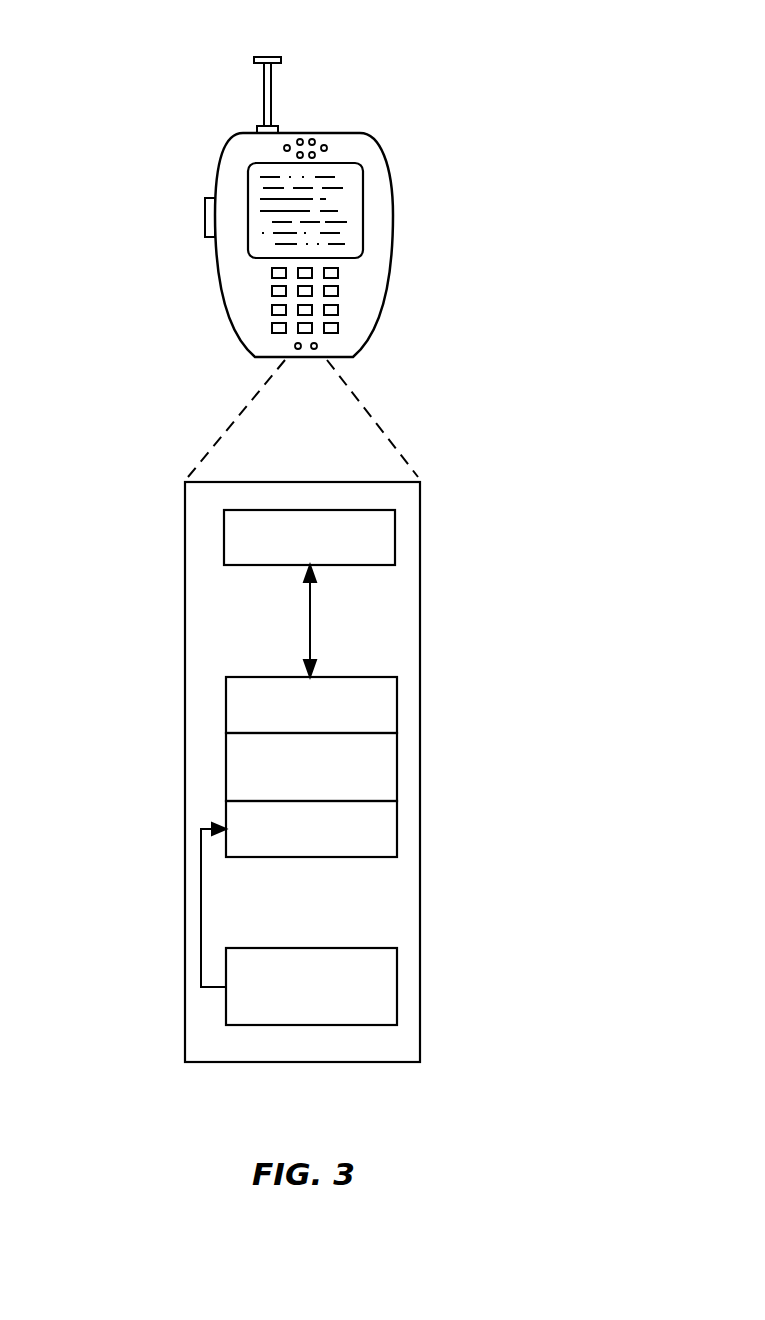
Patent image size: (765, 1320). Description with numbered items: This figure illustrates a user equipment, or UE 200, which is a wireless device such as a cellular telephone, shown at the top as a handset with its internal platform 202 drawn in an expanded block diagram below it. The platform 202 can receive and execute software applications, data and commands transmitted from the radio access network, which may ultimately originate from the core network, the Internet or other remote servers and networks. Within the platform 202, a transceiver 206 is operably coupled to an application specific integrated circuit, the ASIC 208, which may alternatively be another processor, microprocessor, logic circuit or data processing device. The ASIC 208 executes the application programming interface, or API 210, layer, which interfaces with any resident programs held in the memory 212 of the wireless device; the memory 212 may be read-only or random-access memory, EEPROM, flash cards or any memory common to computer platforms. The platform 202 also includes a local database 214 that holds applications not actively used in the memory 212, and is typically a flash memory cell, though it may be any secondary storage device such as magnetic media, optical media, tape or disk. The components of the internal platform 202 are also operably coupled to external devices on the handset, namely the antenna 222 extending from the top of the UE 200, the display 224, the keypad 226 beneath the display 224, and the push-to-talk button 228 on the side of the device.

The user equipment (UE) 200 is at (373, 333).
The platform 202 is at (185, 678).
The transceiver 206 is at (395, 539).
The application specific integrated circuit (ASIC) 208 is at (397, 713).
The application programming interface (API) 210 is at (397, 760).
The memory 212 is at (397, 829).
The local database 214 is at (397, 969).
The antenna 222 is at (272, 72).
The display 224 is at (363, 196).
The keypad 226 is at (338, 291).
The push-to-talk button 228 is at (205, 209).